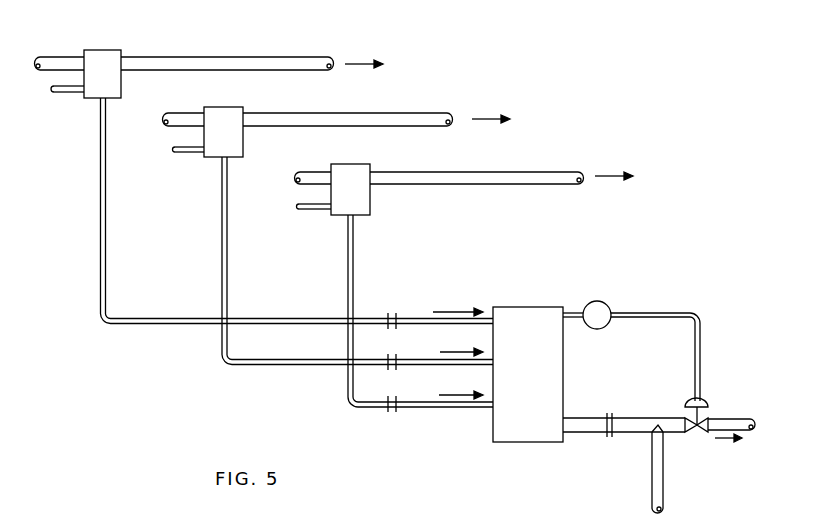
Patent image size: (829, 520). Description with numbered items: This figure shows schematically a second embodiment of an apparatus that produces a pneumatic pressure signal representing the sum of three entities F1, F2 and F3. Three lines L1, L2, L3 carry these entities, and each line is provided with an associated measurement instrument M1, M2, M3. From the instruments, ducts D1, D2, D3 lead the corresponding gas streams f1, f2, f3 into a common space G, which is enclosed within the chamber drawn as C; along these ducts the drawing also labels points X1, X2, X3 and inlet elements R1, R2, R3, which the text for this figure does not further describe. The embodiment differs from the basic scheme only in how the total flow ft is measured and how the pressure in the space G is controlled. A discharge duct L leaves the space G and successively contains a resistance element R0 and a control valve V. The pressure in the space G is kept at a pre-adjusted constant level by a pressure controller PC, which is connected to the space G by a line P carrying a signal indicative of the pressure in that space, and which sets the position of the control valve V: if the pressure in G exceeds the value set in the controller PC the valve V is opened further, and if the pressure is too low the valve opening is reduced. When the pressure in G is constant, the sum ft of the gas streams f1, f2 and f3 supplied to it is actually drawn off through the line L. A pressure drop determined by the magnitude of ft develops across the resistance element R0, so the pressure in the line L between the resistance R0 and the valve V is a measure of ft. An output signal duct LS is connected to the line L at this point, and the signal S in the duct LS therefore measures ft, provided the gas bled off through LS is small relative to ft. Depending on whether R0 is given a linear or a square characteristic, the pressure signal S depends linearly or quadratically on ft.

The measurement instrument M1 is at (90, 50).
The measurement instrument M2 is at (218, 107).
The measurement instrument M3 is at (352, 164).
The line L1 is at (291, 57).
The line L2 is at (387, 113).
The line L3 is at (486, 172).
The entity F1 is at (376, 65).
The entity F2 is at (503, 120).
The entity F3 is at (625, 177).
The first meter output X1 is at (72, 160).
The second meter output X2 is at (197, 183).
The third meter output X3 is at (322, 253).
The duct D1 is at (99, 227).
The duct D2 is at (221, 227).
The duct D3 is at (347, 292).
The first restriction R1 is at (395, 313).
The second restriction R2 is at (395, 354).
The third restriction R3 is at (395, 396).
The gas stream f1 is at (458, 302).
The gas stream f2 is at (461, 345).
The gas stream f3 is at (461, 387).
The chamber C is at (522, 307).
The space G is at (534, 389).
The line or duct P is at (572, 312).
The pressure controller PC is at (597, 315).
The resistance element R0 is at (609, 412).
The discharge duct L is at (633, 432).
The control valve V is at (690, 432).
The sum of the gas streams ft is at (731, 440).
The pressure signal S is at (646, 469).
The output signal duct LS is at (663, 481).